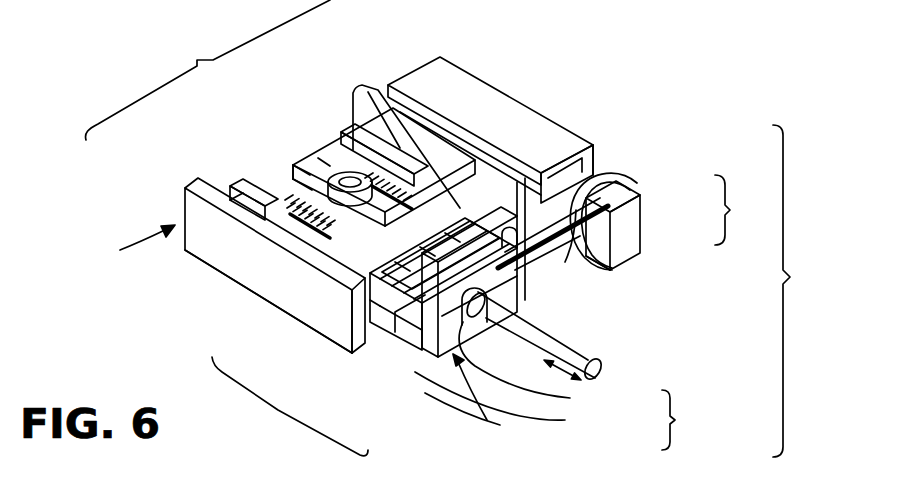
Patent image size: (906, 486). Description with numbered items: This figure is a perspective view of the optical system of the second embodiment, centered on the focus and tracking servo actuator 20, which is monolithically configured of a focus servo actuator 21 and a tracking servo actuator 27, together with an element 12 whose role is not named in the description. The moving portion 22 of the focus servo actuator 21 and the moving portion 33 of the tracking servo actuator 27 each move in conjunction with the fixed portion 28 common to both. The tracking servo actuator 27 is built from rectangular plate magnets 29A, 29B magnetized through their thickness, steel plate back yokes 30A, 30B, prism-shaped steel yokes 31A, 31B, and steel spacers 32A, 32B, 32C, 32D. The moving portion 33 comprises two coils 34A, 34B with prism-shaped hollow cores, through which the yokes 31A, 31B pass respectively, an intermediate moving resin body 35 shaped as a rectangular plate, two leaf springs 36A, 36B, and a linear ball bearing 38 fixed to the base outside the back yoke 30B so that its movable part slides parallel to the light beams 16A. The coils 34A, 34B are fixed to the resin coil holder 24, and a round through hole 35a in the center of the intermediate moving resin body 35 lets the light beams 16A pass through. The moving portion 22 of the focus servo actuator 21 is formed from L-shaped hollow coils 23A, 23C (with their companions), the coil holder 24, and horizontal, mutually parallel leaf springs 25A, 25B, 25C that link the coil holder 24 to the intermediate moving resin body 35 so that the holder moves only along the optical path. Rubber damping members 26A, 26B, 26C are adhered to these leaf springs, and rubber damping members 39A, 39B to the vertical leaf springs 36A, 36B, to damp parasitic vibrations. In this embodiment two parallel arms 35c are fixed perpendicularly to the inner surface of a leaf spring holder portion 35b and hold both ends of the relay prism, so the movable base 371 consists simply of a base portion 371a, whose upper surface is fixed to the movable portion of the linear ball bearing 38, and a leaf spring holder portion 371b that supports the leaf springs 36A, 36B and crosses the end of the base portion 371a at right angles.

The connector strip 12 is at (330, 148).
The light beams 16A is at (578, 360).
The focus and tracking servo actuator 20 is at (113, 263).
The focus servo actuator 21 is at (285, 272).
The moving portion 22 is at (199, 55).
The L-shaped hollow coil 23A is at (300, 197).
The L-shaped hollow coil 23C is at (322, 157).
The coil holder 24 is at (330, 192).
The leaf spring 25A is at (318, 190).
The leaf spring 25B is at (400, 332).
The leaf spring 25C is at (375, 86).
The rubber damping member 26A is at (377, 295).
The rubber damping member 26B is at (390, 330).
The rubber damping member 26C is at (552, 142).
The tracking servo actuator 27 is at (553, 447).
The fixed portion 28 is at (267, 434).
The plate magnet 29A is at (300, 300).
The plate magnet 29B is at (450, 195).
The back yoke 30A is at (285, 297).
The back yoke 30B is at (478, 178).
The yoke 31A is at (373, 328).
The yoke 31B is at (548, 135).
The spacer 32A is at (237, 184).
The spacer 32B is at (388, 300).
The spacer 32C is at (318, 158).
The spacer 32D is at (515, 250).
The moving portion 33 is at (833, 285).
The coil 34A is at (300, 233).
The coil 34B is at (347, 180).
The intermediate moving resin body 35 is at (715, 435).
The round through hole 35a is at (535, 359).
The leaf spring holder portion 35b is at (570, 398).
The parallel arms 35c is at (565, 420).
The leaf spring 36A is at (577, 270).
The leaf spring 36B is at (560, 265).
The movable base 371 is at (777, 222).
The base portion 371a is at (637, 183).
The leaf spring holder portion 371b is at (637, 231).
The linear ball bearing 38 is at (608, 165).
The rubber damping member 39A is at (565, 262).
The rubber damping member 39B is at (612, 262).